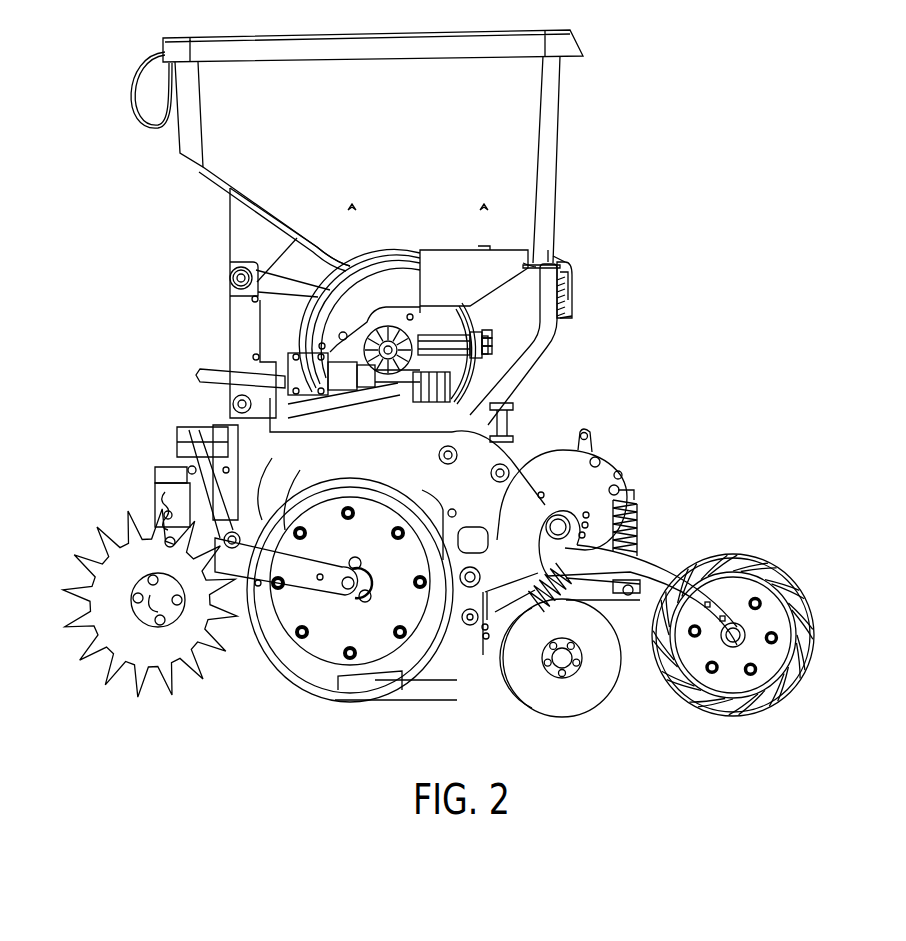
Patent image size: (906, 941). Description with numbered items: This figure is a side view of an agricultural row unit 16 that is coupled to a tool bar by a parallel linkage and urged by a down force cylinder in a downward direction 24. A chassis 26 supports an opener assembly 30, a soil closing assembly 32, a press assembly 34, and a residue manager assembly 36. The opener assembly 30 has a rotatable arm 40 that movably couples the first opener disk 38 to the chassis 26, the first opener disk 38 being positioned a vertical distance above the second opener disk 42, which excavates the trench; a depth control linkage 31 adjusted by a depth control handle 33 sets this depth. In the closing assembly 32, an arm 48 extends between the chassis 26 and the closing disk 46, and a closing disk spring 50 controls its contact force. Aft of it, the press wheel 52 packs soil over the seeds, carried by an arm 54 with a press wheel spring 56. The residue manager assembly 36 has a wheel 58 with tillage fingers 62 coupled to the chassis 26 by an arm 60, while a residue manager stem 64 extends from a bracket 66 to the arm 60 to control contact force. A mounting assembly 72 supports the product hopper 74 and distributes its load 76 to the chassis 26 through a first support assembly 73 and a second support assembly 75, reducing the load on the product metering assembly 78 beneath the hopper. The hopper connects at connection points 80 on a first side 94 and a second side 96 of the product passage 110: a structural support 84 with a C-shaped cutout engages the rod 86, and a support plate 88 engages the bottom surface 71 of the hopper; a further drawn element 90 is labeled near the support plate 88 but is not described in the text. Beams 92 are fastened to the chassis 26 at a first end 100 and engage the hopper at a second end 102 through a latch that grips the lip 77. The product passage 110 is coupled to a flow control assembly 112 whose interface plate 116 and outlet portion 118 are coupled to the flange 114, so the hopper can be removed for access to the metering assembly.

The row unit 16 is at (122, 44).
The downward direction 24 is at (72, 393).
The chassis 26 is at (360, 467).
The opener assembly 30 is at (328, 609).
The depth control linkage 31 is at (210, 424).
The soil closing assembly 32 is at (540, 757).
The depth control handle 33 is at (527, 428).
The press assembly 34 is at (675, 540).
The residue manager assembly 36 is at (150, 607).
The first opener disk 38 is at (328, 655).
The rotatable arm 40 is at (313, 573).
The second opener disk 42 is at (266, 676).
The closing disk 46 is at (580, 710).
The arm 48 is at (445, 662).
The closing disk spring 50 is at (575, 592).
The press wheel 52 is at (785, 570).
The arm 54 is at (680, 556).
The press wheel spring 56 is at (637, 525).
The wheel 58 is at (133, 622).
The arm 60 is at (124, 537).
The tillage points or fingers 62 is at (98, 527).
The residue manager stem 64 is at (160, 467).
The bracket 66 is at (178, 487).
The bottom surface 71 is at (560, 262).
The mounting assembly 72 is at (157, 222).
The first support assembly 73 is at (232, 350).
The product hopper 74 is at (405, 168).
The second support assembly 75 is at (632, 275).
The load 76 is at (611, 88).
The lip 77 is at (557, 250).
The product metering assembly 78 is at (343, 265).
The connection points 80 is at (213, 281).
The structural support 84 is at (230, 230).
The rod 86 is at (237, 283).
The support plate 88 is at (567, 272).
The clip 90 is at (562, 320).
The beams 92 is at (505, 372).
The first side 94 is at (105, 398).
The second side 96 is at (648, 564).
The first end 100 is at (585, 445).
The second end 102 is at (610, 283).
The product passage 110 is at (477, 288).
The flow control assembly 112 is at (487, 322).
The flange 114 is at (490, 334).
The interface plate 116 is at (490, 342).
The outlet portion 118 is at (490, 352).